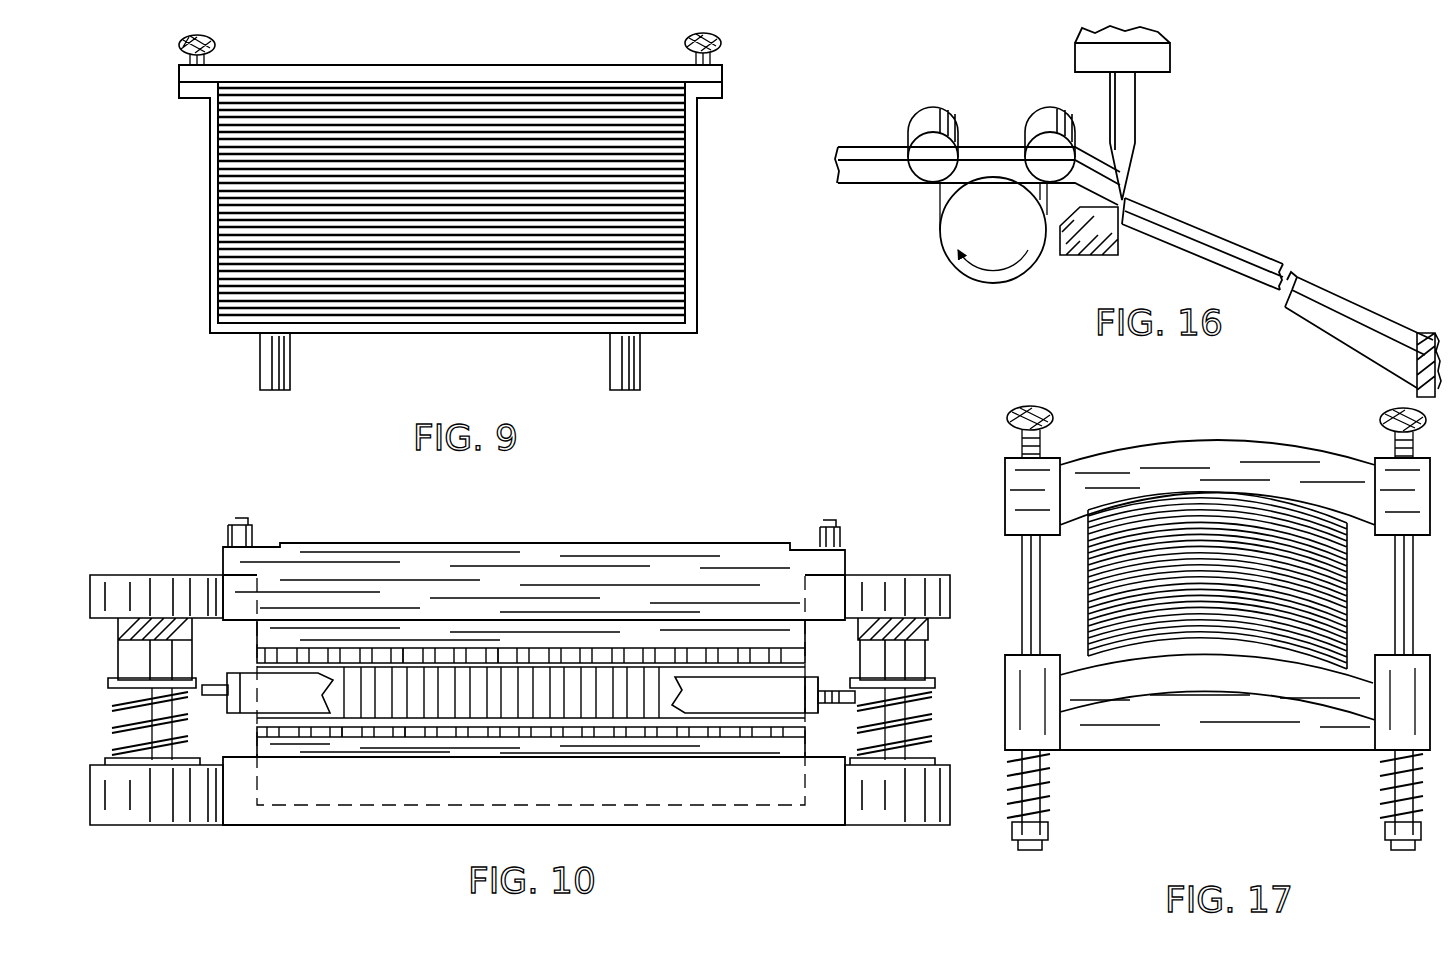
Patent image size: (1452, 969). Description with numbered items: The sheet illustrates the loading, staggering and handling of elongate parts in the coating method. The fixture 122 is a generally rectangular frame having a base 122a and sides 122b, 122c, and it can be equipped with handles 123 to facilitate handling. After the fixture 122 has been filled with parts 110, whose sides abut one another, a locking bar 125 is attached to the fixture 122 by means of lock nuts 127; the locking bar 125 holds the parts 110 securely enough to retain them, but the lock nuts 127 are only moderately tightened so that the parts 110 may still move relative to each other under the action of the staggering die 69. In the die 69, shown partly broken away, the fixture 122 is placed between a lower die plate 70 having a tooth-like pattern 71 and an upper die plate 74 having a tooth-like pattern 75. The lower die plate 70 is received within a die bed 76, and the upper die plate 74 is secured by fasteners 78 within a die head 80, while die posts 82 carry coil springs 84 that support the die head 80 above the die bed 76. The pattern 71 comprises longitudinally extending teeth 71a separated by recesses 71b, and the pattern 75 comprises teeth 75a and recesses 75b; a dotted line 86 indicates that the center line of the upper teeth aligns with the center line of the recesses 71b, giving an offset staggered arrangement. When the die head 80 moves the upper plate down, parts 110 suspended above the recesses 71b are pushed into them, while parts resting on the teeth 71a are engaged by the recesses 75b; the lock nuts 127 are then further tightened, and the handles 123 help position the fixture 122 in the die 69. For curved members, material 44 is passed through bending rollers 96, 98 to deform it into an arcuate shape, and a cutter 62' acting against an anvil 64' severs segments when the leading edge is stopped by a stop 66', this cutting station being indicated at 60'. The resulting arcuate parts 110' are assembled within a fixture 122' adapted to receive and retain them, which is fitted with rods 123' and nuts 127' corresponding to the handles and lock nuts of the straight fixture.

In FIG. 9, the fixture 122 is at (410, 199).
In FIG. 10, the fixture 122 is at (522, 706).
In FIG. 9, the base 122a is at (458, 333).
In FIG. 9, the side 122b is at (208, 201).
In FIG. 9, the side 122c is at (698, 204).
In FIG. 9, the handles 123 is at (450, 361).
In FIG. 10, the handles 123 is at (833, 679).
In FIG. 9, the locking bar 125 is at (445, 72).
In FIG. 9, the lock nuts 127 is at (450, 40).
In FIG. 9, the parts 110 is at (451, 166).
In FIG. 17, the parts 110 is at (1217, 565).
In FIG. 16, the material 44 is at (873, 185).
In FIG. 16, the bending roller 96 is at (948, 230).
In FIG. 16, the bending rollers 98 is at (1030, 126).
In FIG. 16, the cutting station 60' is at (1163, 59).
In FIG. 16, the cutter 62' is at (1159, 136).
In FIG. 16, the anvil 64' is at (1094, 242).
In FIG. 16, the arcuate parts 110' is at (1277, 293).
In FIG. 16, the stop 66' is at (1415, 340).
In FIG. 10, the die 69 is at (175, 527).
In FIG. 10, the lower die plate 70 is at (292, 745).
In FIG. 10, the tooth-like pattern 71 is at (512, 735).
In FIG. 10, the teeth 71a is at (392, 735).
In FIG. 10, the recesses 71b is at (336, 747).
In FIG. 10, the upper die plate 74 is at (722, 632).
In FIG. 10, the tooth-like pattern 75 is at (628, 640).
In FIG. 10, the teeth 75a is at (508, 650).
In FIG. 10, the recesses 75b is at (410, 650).
In FIG. 10, the die bed 76 is at (247, 795).
In FIG. 10, the fasteners 78 is at (255, 532).
In FIG. 10, the die head 80 is at (518, 595).
In FIG. 10, the die posts 82 is at (165, 725).
In FIG. 10, the coil springs 84 is at (218, 670).
In FIG. 10, the dotted line 86 is at (466, 717).
In FIG. 17, the fixture 122' is at (1217, 642).
In FIG. 17, the cartridge rods 123' is at (1215, 692).
In FIG. 17, the knob 127' is at (1216, 432).